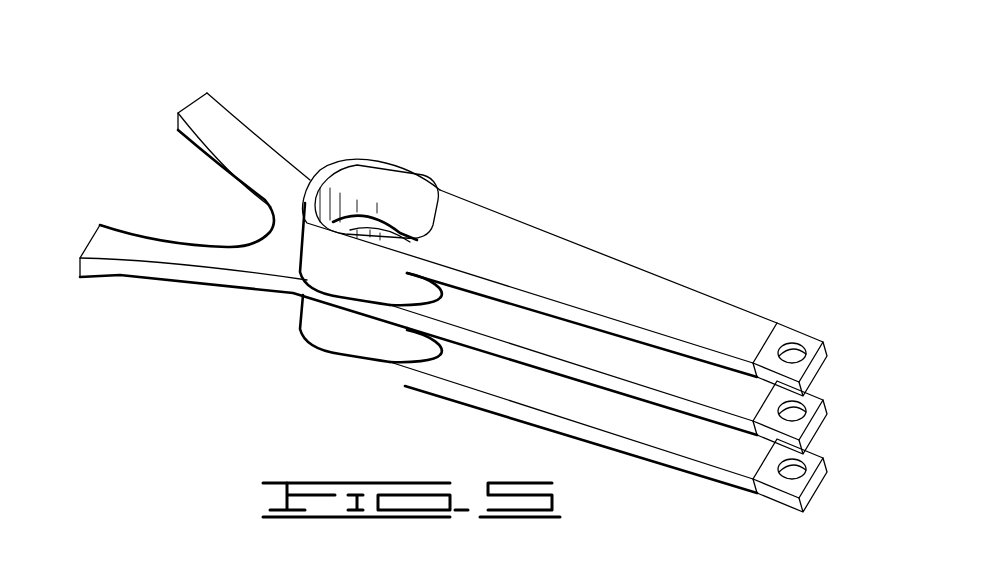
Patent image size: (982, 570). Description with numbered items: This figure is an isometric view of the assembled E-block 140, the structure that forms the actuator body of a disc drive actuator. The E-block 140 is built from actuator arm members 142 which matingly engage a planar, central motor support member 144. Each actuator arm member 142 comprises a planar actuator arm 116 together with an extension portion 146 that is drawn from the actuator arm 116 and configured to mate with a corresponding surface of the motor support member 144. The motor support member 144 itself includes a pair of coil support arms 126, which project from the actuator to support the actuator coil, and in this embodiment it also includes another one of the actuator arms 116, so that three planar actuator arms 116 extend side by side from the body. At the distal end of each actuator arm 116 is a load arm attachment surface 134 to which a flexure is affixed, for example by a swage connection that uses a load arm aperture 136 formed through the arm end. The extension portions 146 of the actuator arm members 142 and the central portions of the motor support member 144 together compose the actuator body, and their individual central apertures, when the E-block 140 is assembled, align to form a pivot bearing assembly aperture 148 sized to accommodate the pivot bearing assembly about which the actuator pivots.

The E-block 140 is at (138, 151).
The coil support arms 126 is at (213, 117).
The motor support member 144 is at (287, 287).
The actuator arm members 142 is at (490, 213).
The extension portion 146 is at (360, 177).
The pivot bearing assembly aperture 148 is at (392, 190).
The actuator arms 116 is at (518, 302).
The load arm attachment surfaces 134 is at (782, 340).
The load arm apertures 136 is at (800, 469).